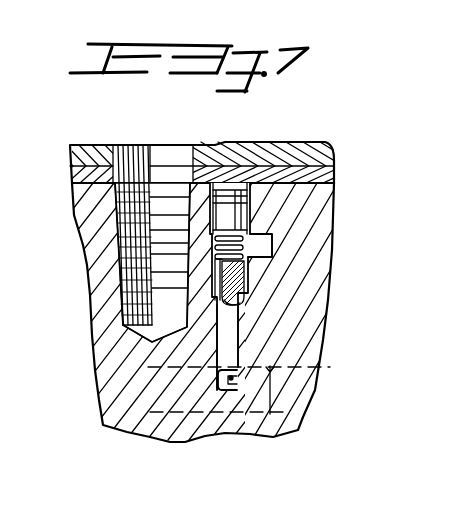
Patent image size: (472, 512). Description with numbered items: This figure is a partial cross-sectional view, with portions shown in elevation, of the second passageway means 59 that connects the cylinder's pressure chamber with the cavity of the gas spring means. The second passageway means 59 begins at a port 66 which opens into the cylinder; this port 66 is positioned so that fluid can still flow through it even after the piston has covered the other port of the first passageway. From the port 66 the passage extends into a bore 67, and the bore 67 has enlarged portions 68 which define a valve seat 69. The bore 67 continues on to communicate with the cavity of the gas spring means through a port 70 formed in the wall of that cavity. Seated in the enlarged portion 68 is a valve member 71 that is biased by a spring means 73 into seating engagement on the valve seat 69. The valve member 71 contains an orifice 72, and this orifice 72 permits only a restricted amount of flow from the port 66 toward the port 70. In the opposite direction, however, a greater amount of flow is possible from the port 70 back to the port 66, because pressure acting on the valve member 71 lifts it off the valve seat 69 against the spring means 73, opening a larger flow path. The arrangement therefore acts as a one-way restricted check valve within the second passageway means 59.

The second passageway means 59 is at (273, 241).
The port 66 is at (247, 257).
The bore 67 is at (240, 341).
The enlarged portions 68 is at (246, 268).
The valve seat 69 is at (246, 298).
The port 70 is at (233, 377).
The valve member 71 is at (208, 286).
The orifice 72 is at (240, 305).
The spring means 73 is at (252, 229).